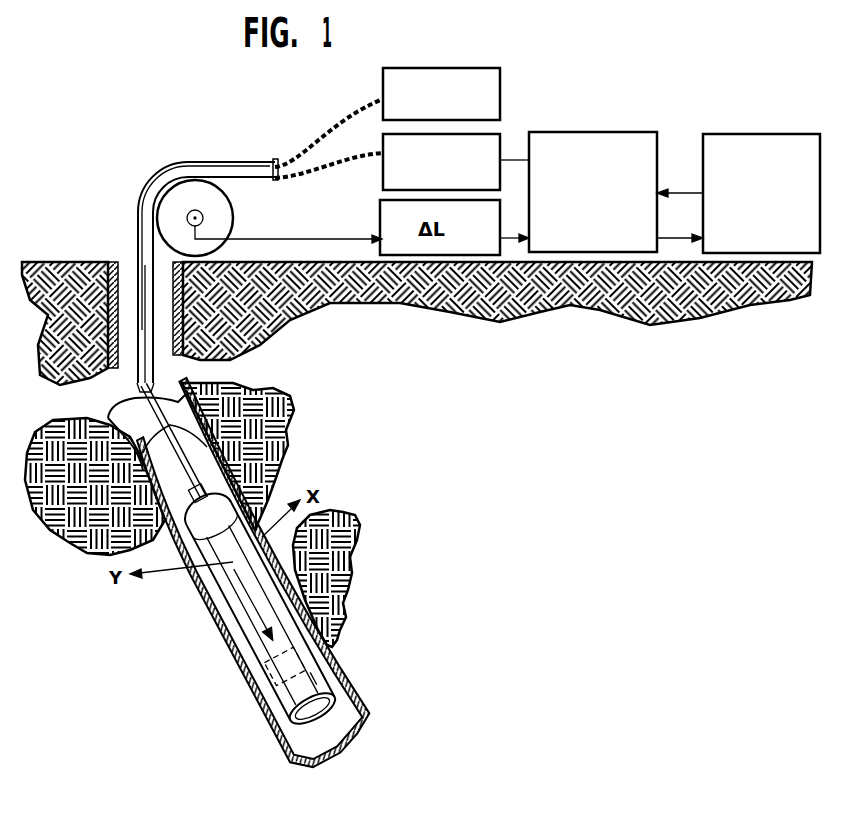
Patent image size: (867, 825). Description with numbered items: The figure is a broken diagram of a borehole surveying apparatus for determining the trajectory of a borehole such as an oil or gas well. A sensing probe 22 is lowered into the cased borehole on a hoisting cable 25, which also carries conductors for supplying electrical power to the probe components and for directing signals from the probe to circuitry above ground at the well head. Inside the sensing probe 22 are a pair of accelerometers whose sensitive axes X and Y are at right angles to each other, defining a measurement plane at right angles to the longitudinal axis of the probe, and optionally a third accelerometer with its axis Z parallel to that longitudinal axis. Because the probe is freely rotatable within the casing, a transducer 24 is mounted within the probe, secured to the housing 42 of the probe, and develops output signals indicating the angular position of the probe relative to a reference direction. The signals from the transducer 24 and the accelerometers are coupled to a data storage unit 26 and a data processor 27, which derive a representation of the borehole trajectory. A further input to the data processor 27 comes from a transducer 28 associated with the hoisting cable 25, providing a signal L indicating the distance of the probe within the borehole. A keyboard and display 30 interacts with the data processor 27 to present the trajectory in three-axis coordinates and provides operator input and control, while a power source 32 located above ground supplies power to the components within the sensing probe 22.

The sensing probe 22 is at (310, 613).
The transducer 24 is at (336, 658).
The hoisting cable 25 is at (180, 466).
The data storage unit 26 is at (485, 150).
The data processor 27 is at (595, 137).
The transducer 28 is at (222, 214).
The keyboard and display 30 is at (735, 137).
The power source 32 is at (498, 82).
The housing 42 is at (235, 625).